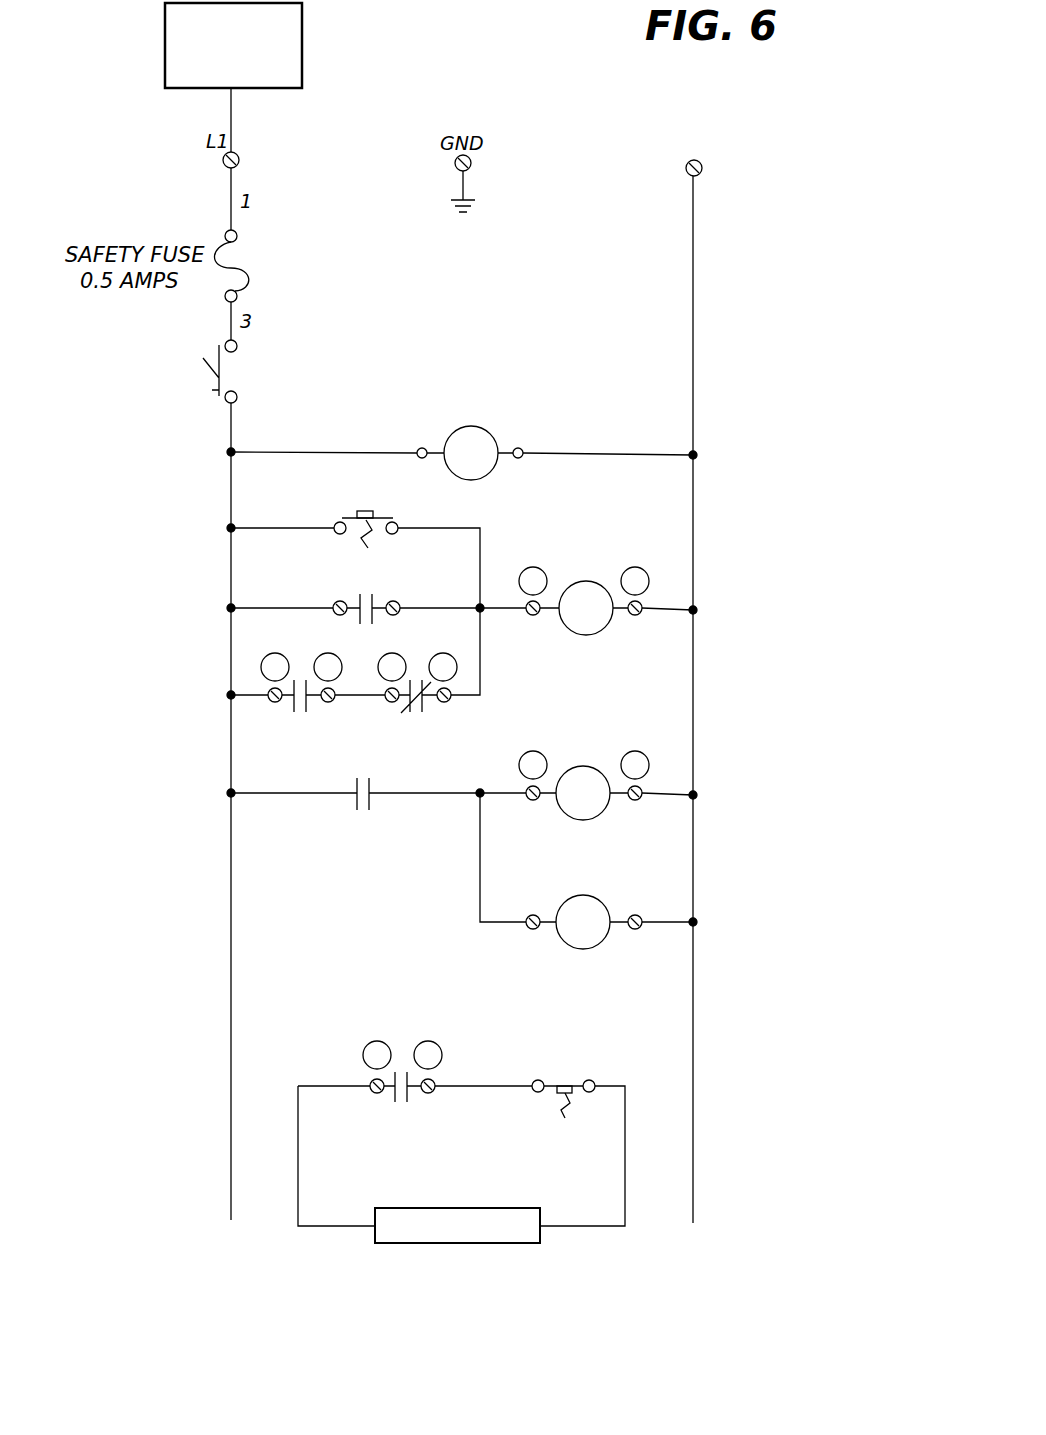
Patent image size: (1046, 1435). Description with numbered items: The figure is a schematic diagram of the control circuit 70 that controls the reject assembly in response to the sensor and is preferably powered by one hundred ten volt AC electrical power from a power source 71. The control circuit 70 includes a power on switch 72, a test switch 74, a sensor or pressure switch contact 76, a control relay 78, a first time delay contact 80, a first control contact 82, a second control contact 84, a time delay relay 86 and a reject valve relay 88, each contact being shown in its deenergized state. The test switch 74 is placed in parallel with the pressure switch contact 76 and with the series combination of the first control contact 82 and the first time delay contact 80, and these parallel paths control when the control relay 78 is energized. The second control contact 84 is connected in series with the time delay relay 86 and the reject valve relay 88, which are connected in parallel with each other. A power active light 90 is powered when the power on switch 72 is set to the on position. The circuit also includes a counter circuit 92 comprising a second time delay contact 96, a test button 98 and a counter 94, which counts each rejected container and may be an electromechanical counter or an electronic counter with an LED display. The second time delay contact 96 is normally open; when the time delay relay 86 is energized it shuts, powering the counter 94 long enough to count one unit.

The control circuit 70 is at (717, 199).
The power source 71 is at (165, 52).
The power on switch 72 is at (212, 395).
The test switch 74 is at (343, 514).
The pressure switch contact 76 is at (345, 600).
The control relay 78 is at (590, 581).
The first time delay contact 80 is at (427, 700).
The first control contact 82 is at (310, 702).
The second control contact 84 is at (350, 800).
The time delay relay 86 is at (588, 767).
The reject valve relay 88 is at (600, 897).
The power active light 90 is at (485, 432).
The counter circuit 92 is at (567, 1236).
The counter 94 is at (478, 1210).
The second time delay contact 96 is at (388, 1098).
The test button 98 is at (590, 1077).